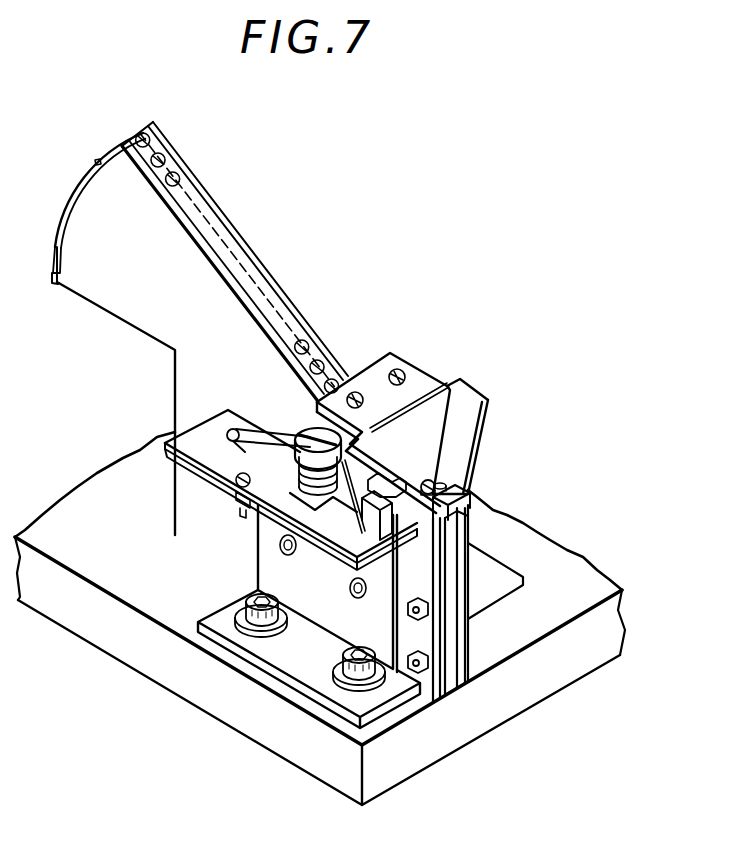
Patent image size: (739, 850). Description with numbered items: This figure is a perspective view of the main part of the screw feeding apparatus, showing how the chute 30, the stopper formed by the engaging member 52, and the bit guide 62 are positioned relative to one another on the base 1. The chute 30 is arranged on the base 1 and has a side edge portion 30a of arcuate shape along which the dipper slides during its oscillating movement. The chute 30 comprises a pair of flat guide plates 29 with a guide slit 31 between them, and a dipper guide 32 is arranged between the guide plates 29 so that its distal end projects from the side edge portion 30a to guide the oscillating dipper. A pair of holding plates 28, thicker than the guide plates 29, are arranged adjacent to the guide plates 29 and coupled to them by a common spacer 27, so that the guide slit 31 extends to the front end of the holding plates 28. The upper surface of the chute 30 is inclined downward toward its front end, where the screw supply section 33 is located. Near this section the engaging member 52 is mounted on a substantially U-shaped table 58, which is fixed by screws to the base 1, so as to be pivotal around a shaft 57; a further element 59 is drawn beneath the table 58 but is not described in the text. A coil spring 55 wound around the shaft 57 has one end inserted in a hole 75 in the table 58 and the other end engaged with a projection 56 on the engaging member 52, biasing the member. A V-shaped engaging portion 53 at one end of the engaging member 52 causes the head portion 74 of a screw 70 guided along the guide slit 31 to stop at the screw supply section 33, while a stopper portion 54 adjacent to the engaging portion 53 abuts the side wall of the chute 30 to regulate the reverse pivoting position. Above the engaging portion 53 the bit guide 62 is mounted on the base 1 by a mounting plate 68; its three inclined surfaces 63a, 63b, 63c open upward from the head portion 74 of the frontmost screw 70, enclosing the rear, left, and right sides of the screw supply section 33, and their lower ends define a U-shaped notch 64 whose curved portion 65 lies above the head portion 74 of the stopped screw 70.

The base 1 is at (152, 658).
The spacer 27 is at (453, 637).
The holding plates 28 is at (442, 698).
The guide plates 29 is at (236, 242).
The chute 30 is at (125, 297).
The side edge portion 30a is at (50, 247).
The guide slit 31 is at (270, 310).
The dipper guide 32 is at (78, 178).
The screw supply section 33 is at (462, 542).
The engaging member 52 is at (205, 437).
The engaging portion 53 is at (458, 518).
The stopper portion 54 is at (353, 473).
The coil spring 55 is at (263, 512).
The projection 56 is at (392, 556).
The shaft 57 is at (310, 435).
The table 58 is at (190, 455).
The screw 59 is at (235, 482).
The bit guide 62 is at (474, 387).
The inclined surface 63a is at (463, 430).
The inclined surface 63b is at (422, 427).
The inclined surface 63c is at (382, 458).
The U-shaped notch 64 is at (470, 498).
The curved portion 65 is at (427, 481).
The mounting plate 68 is at (503, 570).
The screw 70 is at (178, 178).
The head portion 74 is at (446, 484).
The hole 75 is at (238, 430).